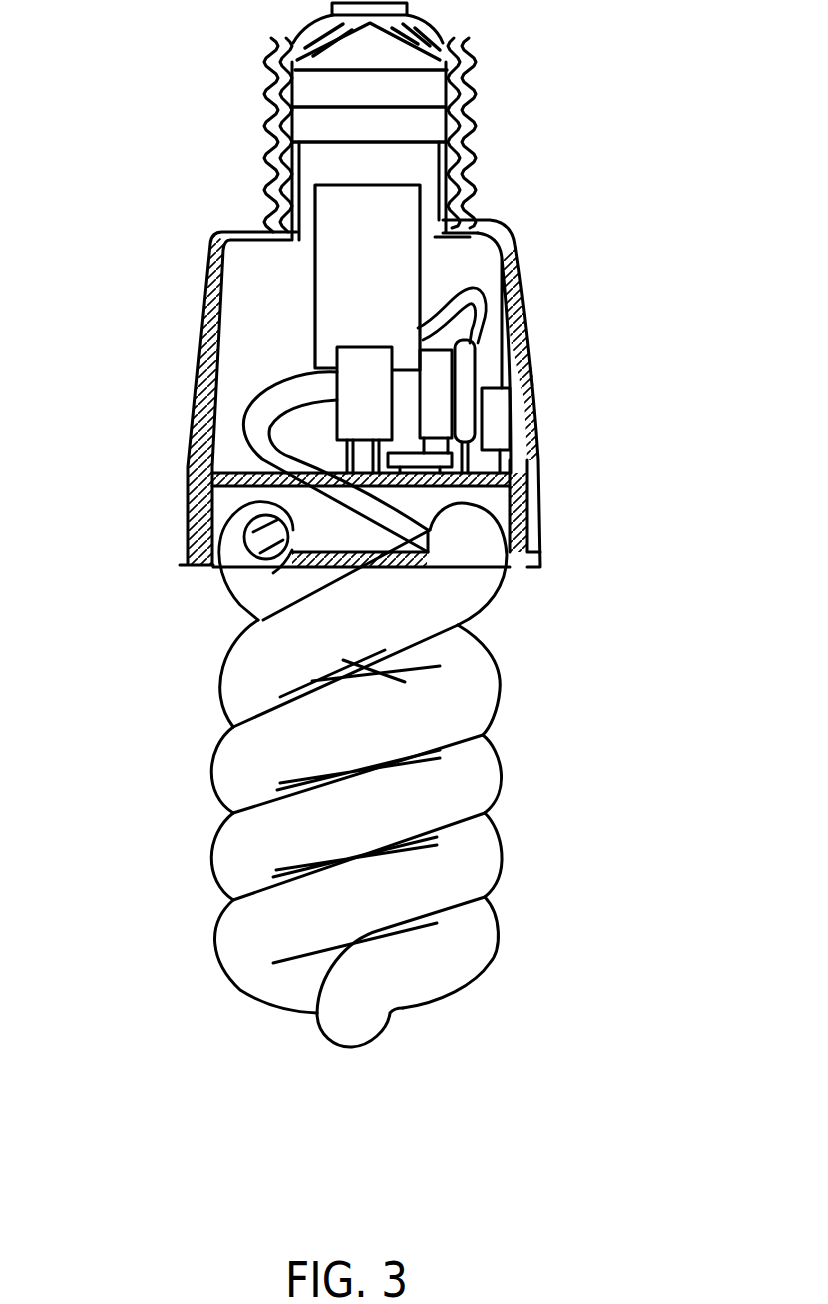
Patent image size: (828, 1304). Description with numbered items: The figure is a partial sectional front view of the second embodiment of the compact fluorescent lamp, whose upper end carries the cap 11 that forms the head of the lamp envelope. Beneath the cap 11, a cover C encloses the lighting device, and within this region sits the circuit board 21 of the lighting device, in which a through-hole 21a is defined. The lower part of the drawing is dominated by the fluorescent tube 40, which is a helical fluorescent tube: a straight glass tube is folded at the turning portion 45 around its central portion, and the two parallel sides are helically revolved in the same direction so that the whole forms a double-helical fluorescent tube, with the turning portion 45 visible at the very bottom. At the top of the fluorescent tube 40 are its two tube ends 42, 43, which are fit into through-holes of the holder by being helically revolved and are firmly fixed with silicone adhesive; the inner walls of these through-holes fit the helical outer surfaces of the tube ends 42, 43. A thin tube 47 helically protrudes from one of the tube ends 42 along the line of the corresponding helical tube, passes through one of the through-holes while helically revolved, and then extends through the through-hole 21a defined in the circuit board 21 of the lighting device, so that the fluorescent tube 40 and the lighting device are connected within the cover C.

The cap 11 is at (478, 52).
The circuit board 21 is at (543, 450).
The through-hole 21a is at (252, 470).
The cover C is at (535, 336).
The thin tube 47 is at (420, 327).
The tube end 43 is at (250, 565).
The tube end 42 is at (470, 540).
The fluorescent tube 40 is at (483, 773).
The turning portion 45 is at (353, 1028).